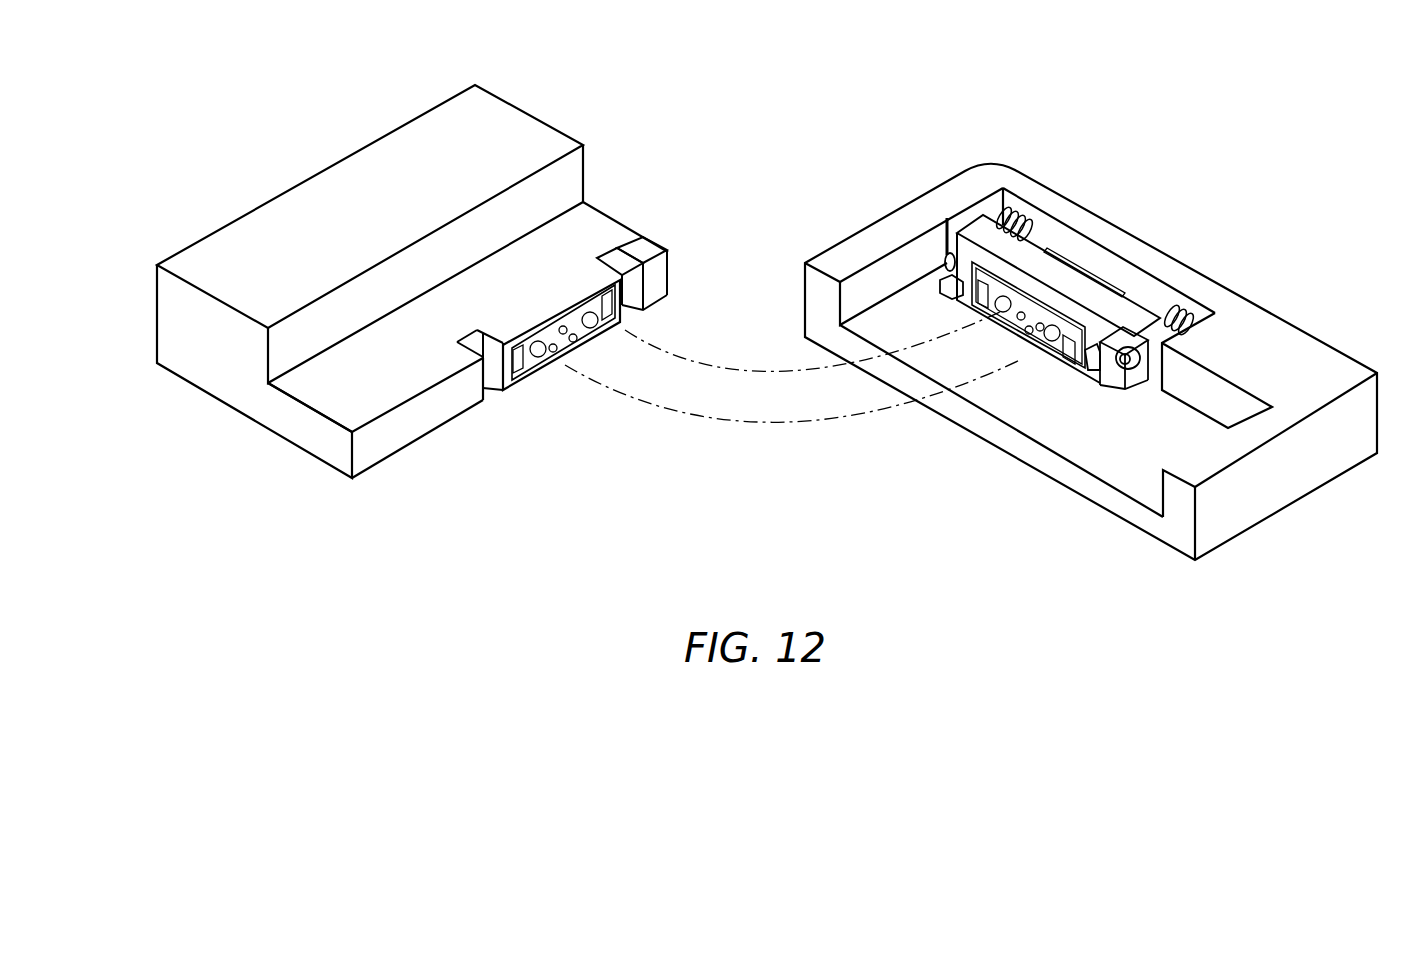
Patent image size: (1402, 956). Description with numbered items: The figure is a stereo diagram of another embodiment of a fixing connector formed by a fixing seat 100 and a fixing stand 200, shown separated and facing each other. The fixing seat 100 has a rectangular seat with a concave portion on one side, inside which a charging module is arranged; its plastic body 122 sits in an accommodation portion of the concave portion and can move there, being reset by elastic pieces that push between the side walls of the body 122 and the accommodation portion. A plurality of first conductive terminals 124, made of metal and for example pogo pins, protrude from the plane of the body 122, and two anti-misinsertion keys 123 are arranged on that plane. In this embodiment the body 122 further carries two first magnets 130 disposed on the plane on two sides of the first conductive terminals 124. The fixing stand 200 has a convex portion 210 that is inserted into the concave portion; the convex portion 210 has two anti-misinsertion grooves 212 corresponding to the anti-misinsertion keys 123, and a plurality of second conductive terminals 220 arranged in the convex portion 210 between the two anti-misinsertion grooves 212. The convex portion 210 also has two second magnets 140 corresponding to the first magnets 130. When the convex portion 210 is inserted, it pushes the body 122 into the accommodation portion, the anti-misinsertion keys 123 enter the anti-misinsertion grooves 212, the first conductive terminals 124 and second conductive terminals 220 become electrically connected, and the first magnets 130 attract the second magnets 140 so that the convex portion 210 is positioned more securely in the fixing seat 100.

The fixing seat 100 is at (1312, 287).
The body 122 is at (1027, 262).
The anti-misinsertion key 123 is at (1088, 373).
The first conductive terminal 124 is at (1042, 346).
The first magnet 130 is at (965, 300).
The second magnet 140 is at (508, 395).
The fixing stand 200 is at (283, 152).
The convex portion 210 is at (604, 231).
The anti-misinsertion groove 212 is at (621, 262).
The second conductive terminal 220 is at (632, 312).